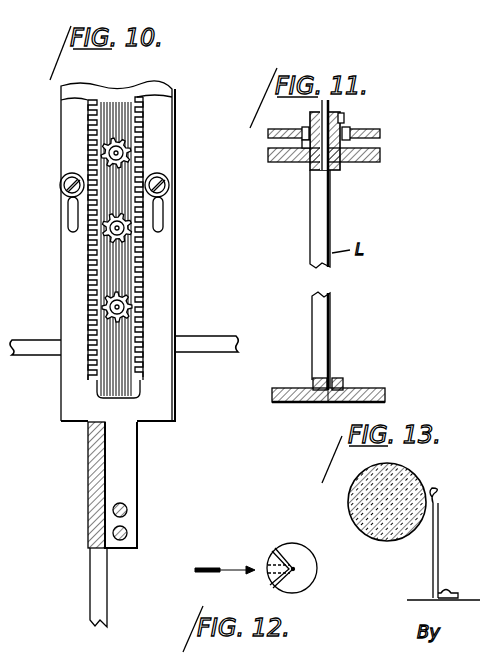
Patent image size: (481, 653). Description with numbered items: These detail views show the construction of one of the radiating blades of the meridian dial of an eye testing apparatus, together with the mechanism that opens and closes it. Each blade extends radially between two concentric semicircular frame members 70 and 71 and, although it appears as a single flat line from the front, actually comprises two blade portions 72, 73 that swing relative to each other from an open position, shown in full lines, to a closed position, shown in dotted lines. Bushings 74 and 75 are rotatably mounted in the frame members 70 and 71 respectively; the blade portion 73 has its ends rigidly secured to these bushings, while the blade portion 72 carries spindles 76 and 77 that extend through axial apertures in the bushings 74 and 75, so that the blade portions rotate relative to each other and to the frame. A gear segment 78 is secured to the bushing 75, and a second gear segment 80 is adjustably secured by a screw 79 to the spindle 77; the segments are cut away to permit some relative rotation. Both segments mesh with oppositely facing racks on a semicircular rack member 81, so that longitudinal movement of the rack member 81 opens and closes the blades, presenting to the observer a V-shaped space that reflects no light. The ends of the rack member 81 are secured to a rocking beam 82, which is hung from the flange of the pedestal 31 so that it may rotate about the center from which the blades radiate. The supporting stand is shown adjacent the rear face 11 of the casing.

In FIG. 10, the semicircular frame member 71 is at (143, 84).
In FIG. 11, the semicircular frame member 71 is at (382, 153).
In FIG. 10, the bushing 75 is at (113, 140).
In FIG. 11, the bushing 75 is at (337, 165).
In FIG. 10, the gear segment 78 is at (100, 157).
In FIG. 11, the gear segment 78 is at (302, 138).
In FIG. 10, the second gear segment 80 is at (137, 150).
In FIG. 11, the second gear segment 80 is at (350, 130).
In FIG. 10, the spindle 77 is at (100, 250).
In FIG. 11, the spindle 77 is at (324, 108).
In FIG. 10, the semicircular rack member 81 is at (163, 268).
In FIG. 11, the semicircular rack member 81 is at (383, 130).
In FIG. 10, the screw 79 is at (140, 316).
In FIG. 11, the screw 79 is at (347, 113).
In FIG. 10, the rocking beam 82 is at (110, 498).
In FIG. 10, the pedestal 31 is at (90, 555).
In FIG. 11, the blade portion 73 is at (315, 242).
In FIG. 12, the blade portion 73 is at (282, 556).
In FIG. 11, the blade portion 72 is at (330, 300).
In FIG. 12, the blade portion 72 is at (297, 580).
In FIG. 11, the semicircular frame member 70 is at (373, 388).
In FIG. 11, the bushing 74 is at (328, 402).
In FIG. 11, the spindle 76 is at (330, 402).
In FIG. 13, the rear face 11 is at (444, 536).